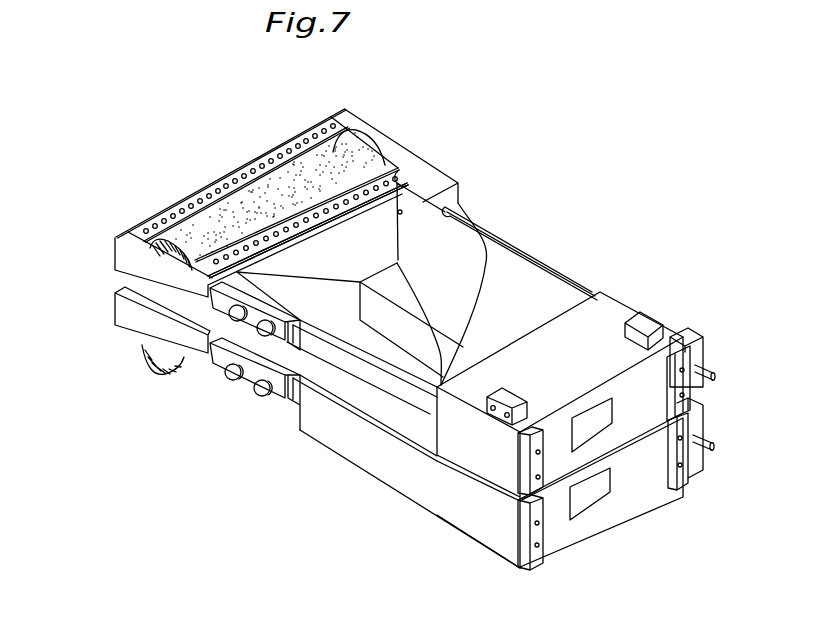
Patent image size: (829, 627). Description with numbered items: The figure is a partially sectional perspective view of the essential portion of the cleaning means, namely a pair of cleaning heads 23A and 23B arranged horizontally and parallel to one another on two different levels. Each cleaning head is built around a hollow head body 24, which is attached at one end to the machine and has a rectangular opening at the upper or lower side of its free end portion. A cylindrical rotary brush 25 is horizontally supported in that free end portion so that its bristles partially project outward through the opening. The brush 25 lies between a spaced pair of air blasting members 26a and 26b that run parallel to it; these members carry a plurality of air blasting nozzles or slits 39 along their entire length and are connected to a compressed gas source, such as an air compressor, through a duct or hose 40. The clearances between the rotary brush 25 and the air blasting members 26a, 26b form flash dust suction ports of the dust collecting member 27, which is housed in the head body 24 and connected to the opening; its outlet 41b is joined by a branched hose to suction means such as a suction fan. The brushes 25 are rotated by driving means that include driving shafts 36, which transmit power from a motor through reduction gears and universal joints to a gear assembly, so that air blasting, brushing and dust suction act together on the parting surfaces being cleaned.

The cleaning head 23A is at (110, 253).
The cleaning head 23B is at (112, 312).
The head body 24 is at (437, 420).
The cylindrical rotary brush 25 is at (365, 150).
The air blasting member 26a is at (316, 128).
The air blasting member 26b is at (405, 170).
The dust collecting member 27 is at (405, 283).
The driving shaft 36 is at (578, 290).
The air blasting nozzles or slits 39 is at (178, 212).
The duct or hose 40 is at (457, 263).
The outlet 41b is at (597, 423).